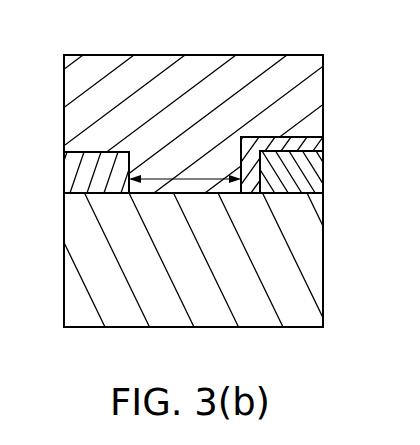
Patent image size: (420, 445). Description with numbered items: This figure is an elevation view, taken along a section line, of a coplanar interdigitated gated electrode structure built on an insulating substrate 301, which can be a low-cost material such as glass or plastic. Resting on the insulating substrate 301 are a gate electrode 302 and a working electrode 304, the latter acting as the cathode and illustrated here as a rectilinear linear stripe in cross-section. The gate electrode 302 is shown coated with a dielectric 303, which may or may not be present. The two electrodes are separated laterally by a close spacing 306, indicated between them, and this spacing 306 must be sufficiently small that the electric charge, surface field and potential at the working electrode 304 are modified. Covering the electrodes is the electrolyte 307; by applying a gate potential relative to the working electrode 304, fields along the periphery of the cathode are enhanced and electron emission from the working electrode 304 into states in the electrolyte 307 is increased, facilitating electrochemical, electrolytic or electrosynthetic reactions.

The insulating substrate 301 is at (82, 320).
The gate electrode 302 is at (297, 188).
The dielectric 303 is at (295, 135).
The working electrode 304 is at (76, 152).
The spacing 306 is at (165, 177).
The electrolyte 307 is at (267, 58).